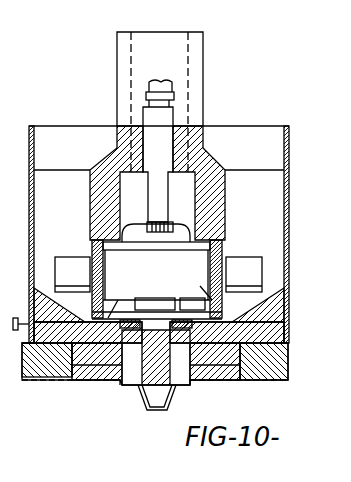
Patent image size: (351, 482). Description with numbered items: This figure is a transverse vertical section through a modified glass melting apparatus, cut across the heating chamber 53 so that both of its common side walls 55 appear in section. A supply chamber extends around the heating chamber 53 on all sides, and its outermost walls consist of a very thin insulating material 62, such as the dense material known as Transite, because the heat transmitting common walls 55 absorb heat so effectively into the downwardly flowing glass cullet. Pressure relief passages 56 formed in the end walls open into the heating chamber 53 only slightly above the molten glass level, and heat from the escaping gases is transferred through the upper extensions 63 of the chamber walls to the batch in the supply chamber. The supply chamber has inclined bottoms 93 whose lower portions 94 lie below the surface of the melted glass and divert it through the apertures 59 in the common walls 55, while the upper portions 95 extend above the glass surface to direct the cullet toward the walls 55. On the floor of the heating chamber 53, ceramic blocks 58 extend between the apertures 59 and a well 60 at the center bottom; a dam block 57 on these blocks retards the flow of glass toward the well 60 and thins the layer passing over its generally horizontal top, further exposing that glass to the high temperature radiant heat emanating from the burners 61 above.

The heating chamber 53 is at (156, 256).
The side walls 55 is at (92, 250).
The passages 56 is at (185, 48).
The dam block 57 is at (176, 328).
The ceramic blocks 58 is at (198, 340).
The apertures 59 is at (148, 306).
The well 60 is at (138, 392).
The burners 61 is at (166, 118).
The insulating material 62 is at (22, 130).
The upper extensions 63 is at (29, 162).
The inclined bottoms 93 is at (64, 296).
The lower portions 94 is at (158, 296).
The upper portions 95 is at (40, 288).